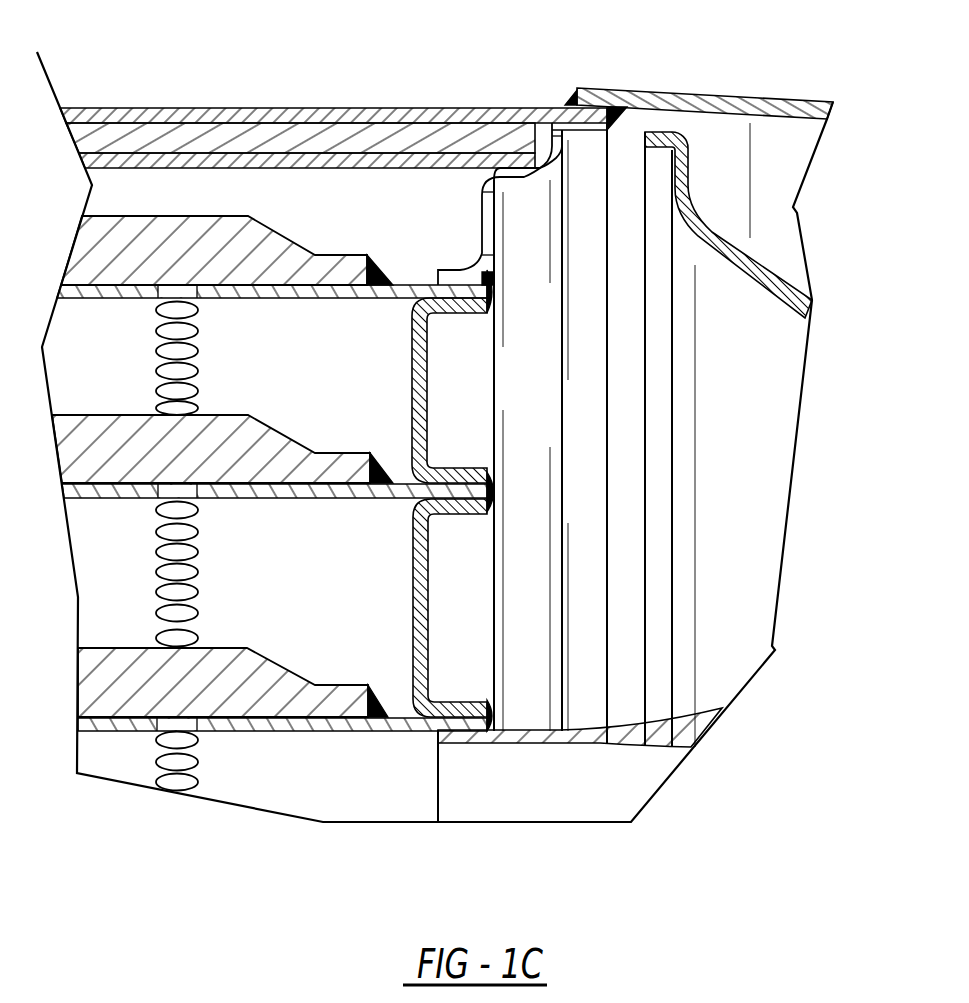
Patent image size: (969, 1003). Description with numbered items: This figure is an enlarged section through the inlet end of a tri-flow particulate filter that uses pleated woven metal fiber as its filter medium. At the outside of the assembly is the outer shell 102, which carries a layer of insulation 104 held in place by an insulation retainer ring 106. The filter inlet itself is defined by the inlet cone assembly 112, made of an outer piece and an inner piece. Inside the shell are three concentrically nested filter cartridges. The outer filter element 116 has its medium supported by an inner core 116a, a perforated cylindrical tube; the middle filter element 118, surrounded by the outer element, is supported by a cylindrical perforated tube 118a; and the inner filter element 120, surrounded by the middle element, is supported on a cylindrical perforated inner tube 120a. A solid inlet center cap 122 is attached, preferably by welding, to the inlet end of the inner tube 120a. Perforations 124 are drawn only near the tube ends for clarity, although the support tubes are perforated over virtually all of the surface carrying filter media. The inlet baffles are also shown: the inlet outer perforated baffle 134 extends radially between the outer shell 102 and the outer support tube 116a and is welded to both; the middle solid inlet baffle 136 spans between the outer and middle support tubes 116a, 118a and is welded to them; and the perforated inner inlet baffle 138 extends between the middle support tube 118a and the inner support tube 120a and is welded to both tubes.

The outer shell 102 is at (362, 106).
The layer of insulation 104 is at (177, 140).
The insulation retainer ring 106 is at (200, 168).
The inlet cone assembly 112 is at (652, 64).
The outer filter element 116 is at (277, 240).
The inner core 116a is at (85, 293).
The middle filter element 118 is at (262, 443).
The cylindrical perforated tube 118a is at (112, 500).
The inner filter element 120 is at (260, 673).
The cylindrical perforated inner tube 120a is at (115, 723).
The solid inlet center cap 122 is at (630, 745).
The perforations 124 is at (190, 352).
The inlet outer perforated baffle 134 is at (553, 165).
The middle solid inlet baffle 136 is at (430, 380).
The perforated inner inlet baffle 138 is at (422, 530).